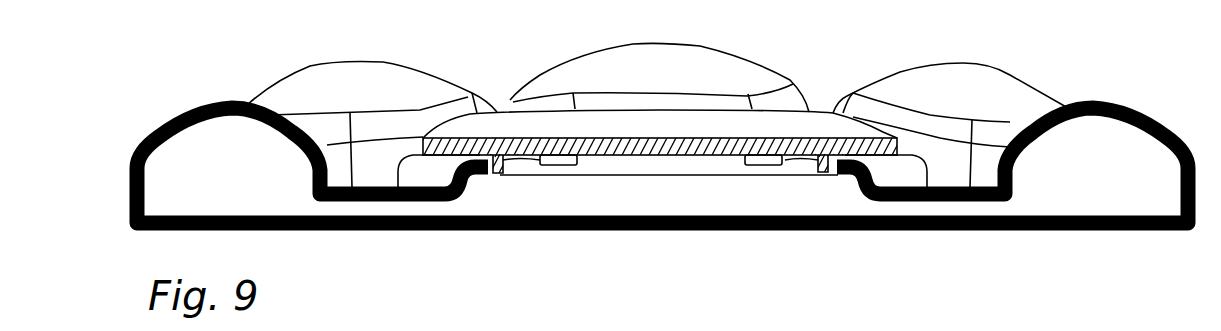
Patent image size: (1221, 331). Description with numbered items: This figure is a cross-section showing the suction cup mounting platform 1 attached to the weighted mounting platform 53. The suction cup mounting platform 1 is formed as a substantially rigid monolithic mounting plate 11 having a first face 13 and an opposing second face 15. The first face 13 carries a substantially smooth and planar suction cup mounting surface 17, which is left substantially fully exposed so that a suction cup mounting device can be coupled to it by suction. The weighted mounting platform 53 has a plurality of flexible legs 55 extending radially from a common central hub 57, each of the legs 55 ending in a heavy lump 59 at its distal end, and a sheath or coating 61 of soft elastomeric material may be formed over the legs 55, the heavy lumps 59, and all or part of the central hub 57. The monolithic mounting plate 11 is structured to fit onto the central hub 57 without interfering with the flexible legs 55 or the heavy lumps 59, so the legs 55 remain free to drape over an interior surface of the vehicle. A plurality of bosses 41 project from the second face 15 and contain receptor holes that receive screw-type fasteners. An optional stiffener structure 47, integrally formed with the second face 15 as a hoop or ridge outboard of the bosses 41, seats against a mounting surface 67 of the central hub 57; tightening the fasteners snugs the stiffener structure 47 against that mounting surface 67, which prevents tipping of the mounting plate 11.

The suction cup mounting platform 1 is at (496, 112).
The monolithic mounting plate 11 is at (817, 112).
The first face 13 is at (755, 125).
The second face 15 is at (697, 155).
The suction cup mounting surface 17 is at (650, 131).
The bosses 41 is at (574, 167).
The stiffener structure 47 is at (510, 170).
The weighted mounting platform 53 is at (1023, 83).
The flexible legs 55 is at (393, 207).
The central hub 57 is at (655, 204).
The heavy lumps 59 is at (347, 94).
The sheath or coating 61 is at (1015, 226).
The mounting surface 67 is at (617, 178).